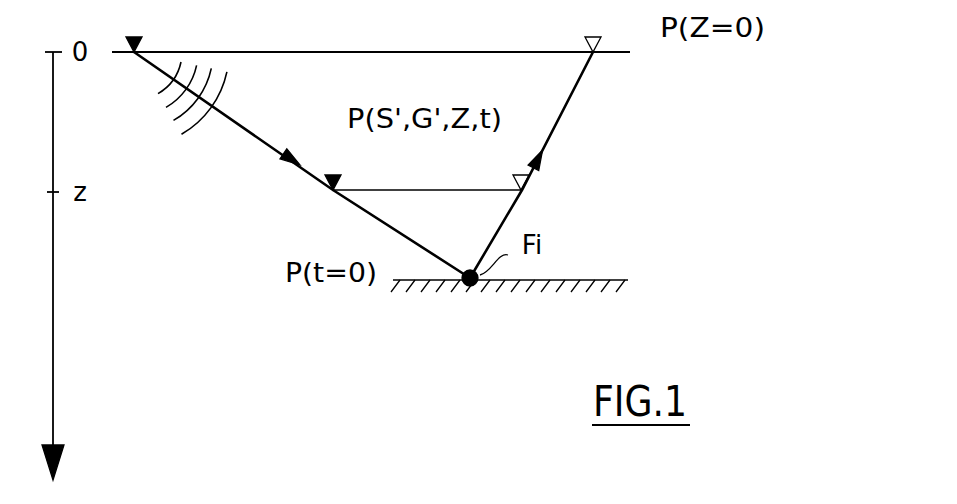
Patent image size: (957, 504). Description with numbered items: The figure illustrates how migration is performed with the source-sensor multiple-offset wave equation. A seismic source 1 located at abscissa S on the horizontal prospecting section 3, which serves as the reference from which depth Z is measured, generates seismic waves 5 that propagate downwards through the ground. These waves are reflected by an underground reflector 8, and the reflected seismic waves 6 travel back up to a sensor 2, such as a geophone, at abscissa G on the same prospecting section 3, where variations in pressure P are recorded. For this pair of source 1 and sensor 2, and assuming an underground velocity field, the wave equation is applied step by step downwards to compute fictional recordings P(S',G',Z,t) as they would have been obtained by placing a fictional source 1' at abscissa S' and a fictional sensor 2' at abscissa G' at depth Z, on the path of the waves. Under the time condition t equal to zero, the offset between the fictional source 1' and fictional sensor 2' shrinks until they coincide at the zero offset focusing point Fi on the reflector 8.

The seismic source 1 is at (160, 26).
The sensor 2 is at (566, 26).
The prospecting section 3 is at (410, 50).
The seismic waves 5 is at (225, 117).
The reflected seismic waves 6 is at (533, 182).
The underground reflector 8 is at (445, 282).
The fictional source 1' is at (358, 164).
The fictional sensor 2' is at (494, 165).